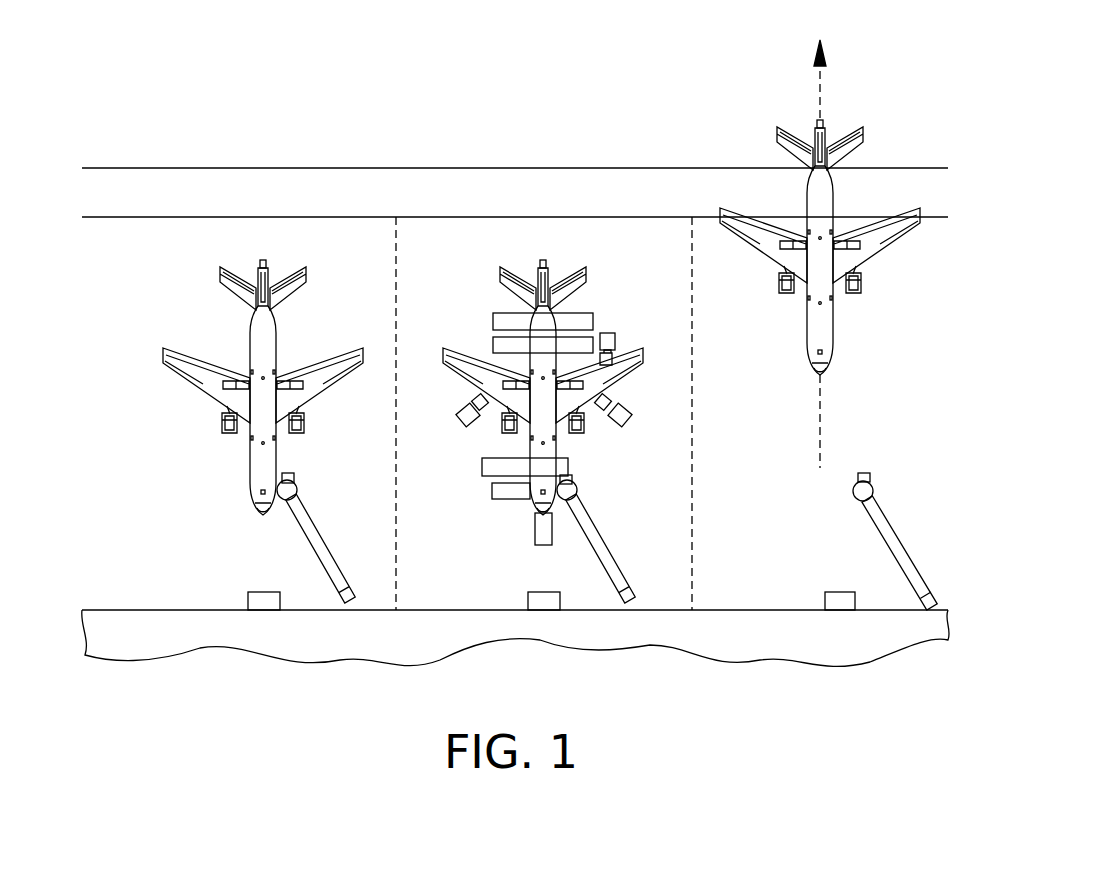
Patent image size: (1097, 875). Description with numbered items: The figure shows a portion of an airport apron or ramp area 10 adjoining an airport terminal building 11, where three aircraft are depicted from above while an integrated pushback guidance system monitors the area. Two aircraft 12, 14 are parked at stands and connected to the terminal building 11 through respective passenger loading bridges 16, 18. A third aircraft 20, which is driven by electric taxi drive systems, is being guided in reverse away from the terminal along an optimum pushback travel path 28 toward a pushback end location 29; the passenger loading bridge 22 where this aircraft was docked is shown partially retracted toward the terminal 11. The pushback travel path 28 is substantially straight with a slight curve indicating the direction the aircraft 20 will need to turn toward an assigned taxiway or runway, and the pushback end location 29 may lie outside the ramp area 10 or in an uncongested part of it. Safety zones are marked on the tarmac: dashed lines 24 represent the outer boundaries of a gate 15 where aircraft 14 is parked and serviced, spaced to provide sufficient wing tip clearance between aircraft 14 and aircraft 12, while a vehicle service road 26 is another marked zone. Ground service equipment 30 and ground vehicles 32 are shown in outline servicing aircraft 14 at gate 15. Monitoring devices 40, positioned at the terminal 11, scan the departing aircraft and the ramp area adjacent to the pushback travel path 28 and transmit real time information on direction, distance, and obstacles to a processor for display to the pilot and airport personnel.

The airport apron or ramp area 10 is at (118, 345).
The airport terminal building 11 is at (842, 633).
The aircraft 12 is at (198, 427).
The aircraft 14 is at (520, 257).
The gate 15 is at (477, 590).
The passenger loading bridge 16 is at (340, 522).
The passenger loading bridge 18 is at (620, 522).
The aircraft 20 is at (893, 290).
The passenger loading bridge 22 is at (915, 522).
The dashed lines 24 is at (398, 526).
The vehicle service road 26 is at (251, 203).
The pushback travel path 28 is at (822, 90).
The pushback end location 29 is at (806, 31).
The ground service equipment 30 is at (492, 320).
The ground vehicles 32 is at (618, 342).
The monitoring devices 40 is at (294, 478).